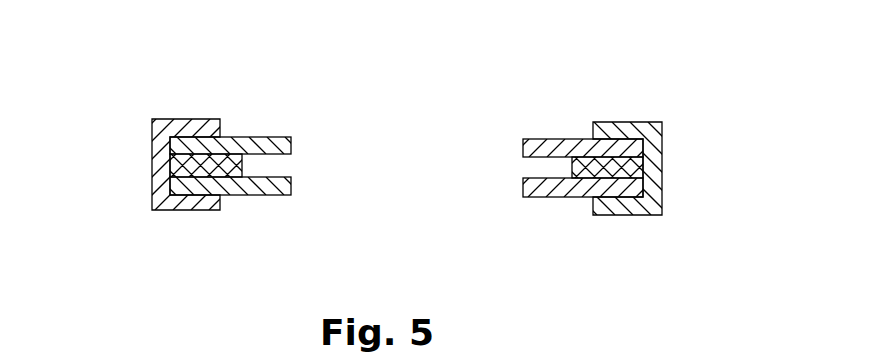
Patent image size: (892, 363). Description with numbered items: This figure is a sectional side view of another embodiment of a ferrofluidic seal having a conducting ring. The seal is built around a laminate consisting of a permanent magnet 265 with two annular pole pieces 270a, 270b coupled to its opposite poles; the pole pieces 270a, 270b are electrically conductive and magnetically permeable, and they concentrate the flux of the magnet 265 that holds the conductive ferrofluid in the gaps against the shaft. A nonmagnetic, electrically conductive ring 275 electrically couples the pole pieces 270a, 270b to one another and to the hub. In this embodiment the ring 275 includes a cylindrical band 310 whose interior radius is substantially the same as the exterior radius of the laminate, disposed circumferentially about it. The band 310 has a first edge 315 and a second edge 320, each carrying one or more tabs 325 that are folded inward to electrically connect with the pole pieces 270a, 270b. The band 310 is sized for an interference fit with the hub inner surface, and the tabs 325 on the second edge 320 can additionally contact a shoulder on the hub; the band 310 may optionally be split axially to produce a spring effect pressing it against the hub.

The first edge 315 is at (159, 125).
The second edge 320 is at (160, 210).
The tabs 325 is at (202, 119).
The annular pole piece 270a is at (272, 137).
The annular pole piece 270b is at (272, 195).
The permanent magnet 265 is at (242, 166).
The nonmagnetic, electrically conductive ring 275 is at (603, 98).
The cylindrical band 310 is at (662, 170).